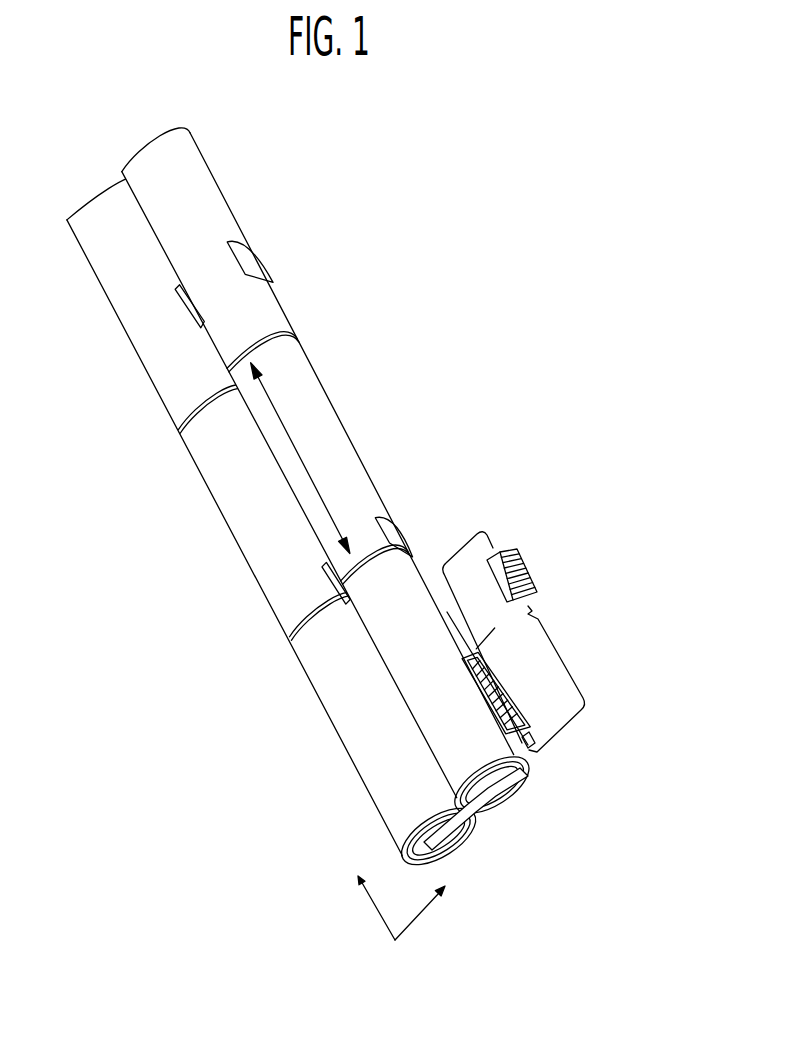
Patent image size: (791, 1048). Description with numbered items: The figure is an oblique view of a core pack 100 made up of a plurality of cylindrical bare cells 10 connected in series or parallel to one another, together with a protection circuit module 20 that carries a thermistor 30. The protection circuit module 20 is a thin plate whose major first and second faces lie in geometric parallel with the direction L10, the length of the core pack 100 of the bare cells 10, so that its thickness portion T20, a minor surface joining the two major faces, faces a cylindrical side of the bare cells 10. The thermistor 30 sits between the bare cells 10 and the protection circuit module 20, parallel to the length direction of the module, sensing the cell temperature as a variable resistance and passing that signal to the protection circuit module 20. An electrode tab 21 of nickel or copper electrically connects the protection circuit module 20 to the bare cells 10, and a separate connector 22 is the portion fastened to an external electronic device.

The core pack 100 is at (456, 191).
The bare cells 10 is at (226, 196).
The length direction of the core pack L10 is at (300, 458).
The protection circuit module 20 is at (572, 655).
The thickness portion T20 is at (447, 598).
The electrode tab 21 is at (527, 770).
The connector 22 is at (528, 573).
The thermistor 30 is at (465, 695).